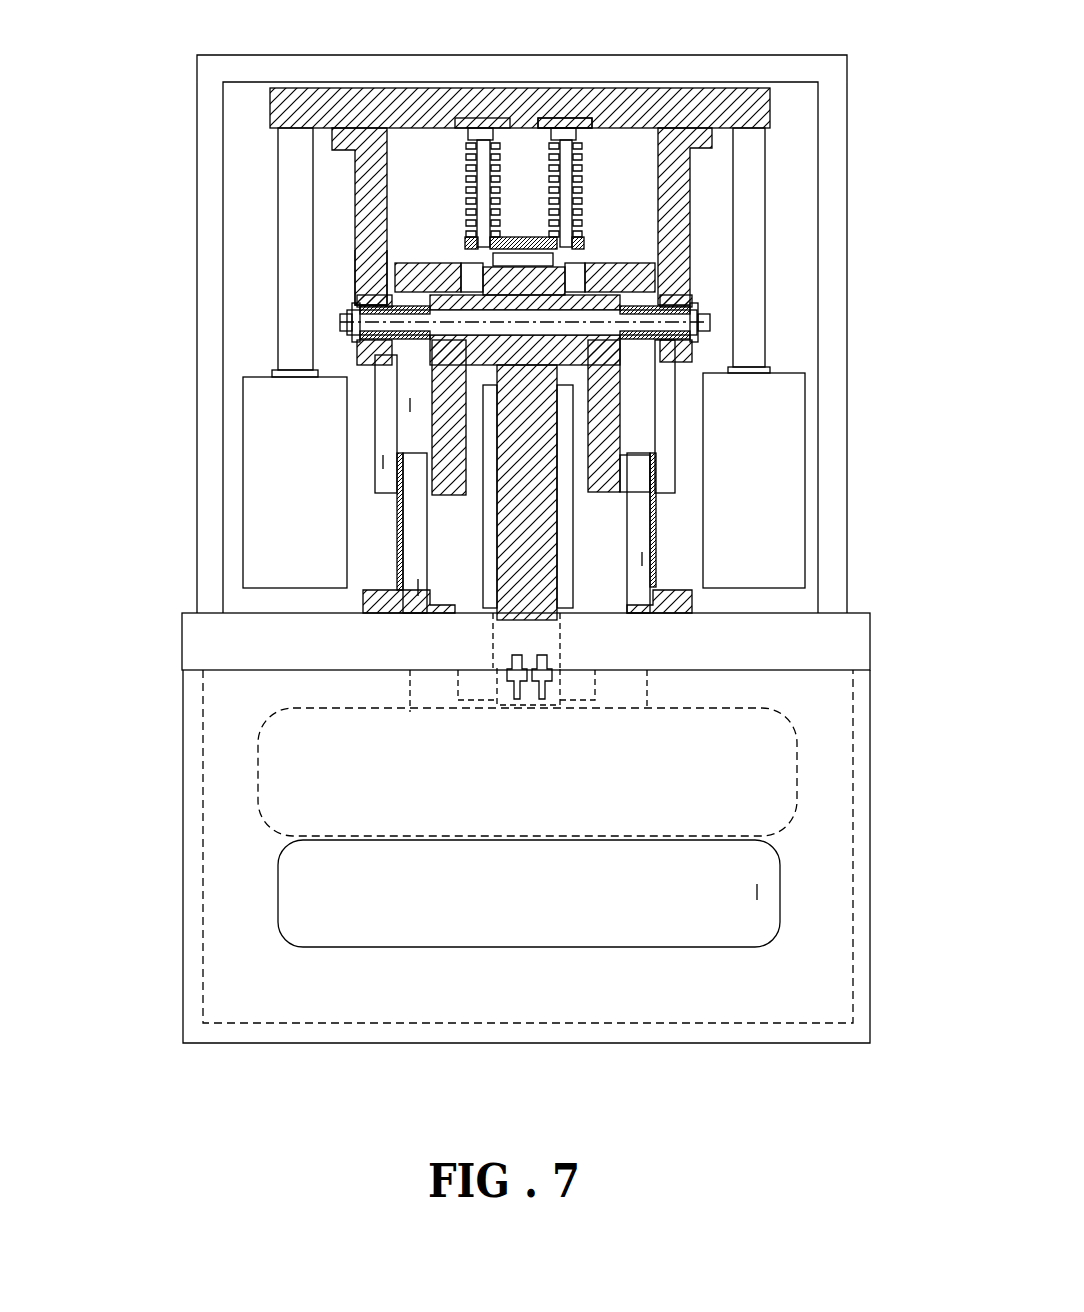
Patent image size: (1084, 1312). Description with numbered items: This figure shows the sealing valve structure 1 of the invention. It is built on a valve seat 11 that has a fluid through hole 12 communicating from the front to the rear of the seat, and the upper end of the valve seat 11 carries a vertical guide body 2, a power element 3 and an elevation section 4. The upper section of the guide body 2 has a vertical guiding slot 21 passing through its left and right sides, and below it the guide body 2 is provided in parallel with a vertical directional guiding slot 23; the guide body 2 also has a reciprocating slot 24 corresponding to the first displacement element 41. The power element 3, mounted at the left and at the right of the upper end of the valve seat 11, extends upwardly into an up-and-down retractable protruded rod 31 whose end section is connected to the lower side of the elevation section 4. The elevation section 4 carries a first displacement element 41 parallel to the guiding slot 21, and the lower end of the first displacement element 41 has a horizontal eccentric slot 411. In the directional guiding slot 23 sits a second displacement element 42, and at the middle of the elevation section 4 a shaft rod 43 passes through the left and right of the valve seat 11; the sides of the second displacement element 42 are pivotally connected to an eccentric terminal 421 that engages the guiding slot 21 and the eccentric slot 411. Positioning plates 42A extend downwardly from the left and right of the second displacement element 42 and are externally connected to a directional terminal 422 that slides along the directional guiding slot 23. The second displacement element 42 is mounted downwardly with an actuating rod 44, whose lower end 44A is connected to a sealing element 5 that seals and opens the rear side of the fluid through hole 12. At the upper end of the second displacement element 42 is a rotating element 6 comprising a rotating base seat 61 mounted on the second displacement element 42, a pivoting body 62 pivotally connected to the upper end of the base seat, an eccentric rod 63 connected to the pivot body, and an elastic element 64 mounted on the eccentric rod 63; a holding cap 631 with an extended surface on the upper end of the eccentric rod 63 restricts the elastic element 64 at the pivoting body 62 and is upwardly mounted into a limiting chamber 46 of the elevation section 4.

The frame 1 is at (165, 110).
The guide body 2 is at (383, 606).
The power element 3 is at (587, 358).
The elevation section 4 is at (499, 158).
The sealing element 5 is at (795, 767).
The rotating element 6 is at (642, 149).
The valve seat 11 is at (518, 856).
The fluid through hole 12 is at (757, 893).
The guiding slot 21 is at (383, 462).
The directional guiding slot 23 is at (418, 587).
The reciprocating slot 24 is at (418, 485).
The protruded rod 31 is at (750, 272).
The first displacement element 41 is at (405, 216).
The second displacement element 42 is at (515, 383).
The positioning plate 42A is at (660, 432).
The shaft rod 43 is at (355, 342).
The actuating rod 44 is at (540, 605).
The push rod end 44A is at (487, 578).
The limiting chamber 46 is at (450, 120).
The rotating base seat 61 is at (485, 264).
The pivoting body 62 is at (462, 248).
The eccentric rod 63 is at (572, 193).
The elastic element 64 is at (523, 140).
The eccentric slot 411 is at (357, 283).
The eccentric terminal 421 is at (350, 313).
The directional terminal 422 is at (400, 535).
The holding cap 631 is at (563, 122).